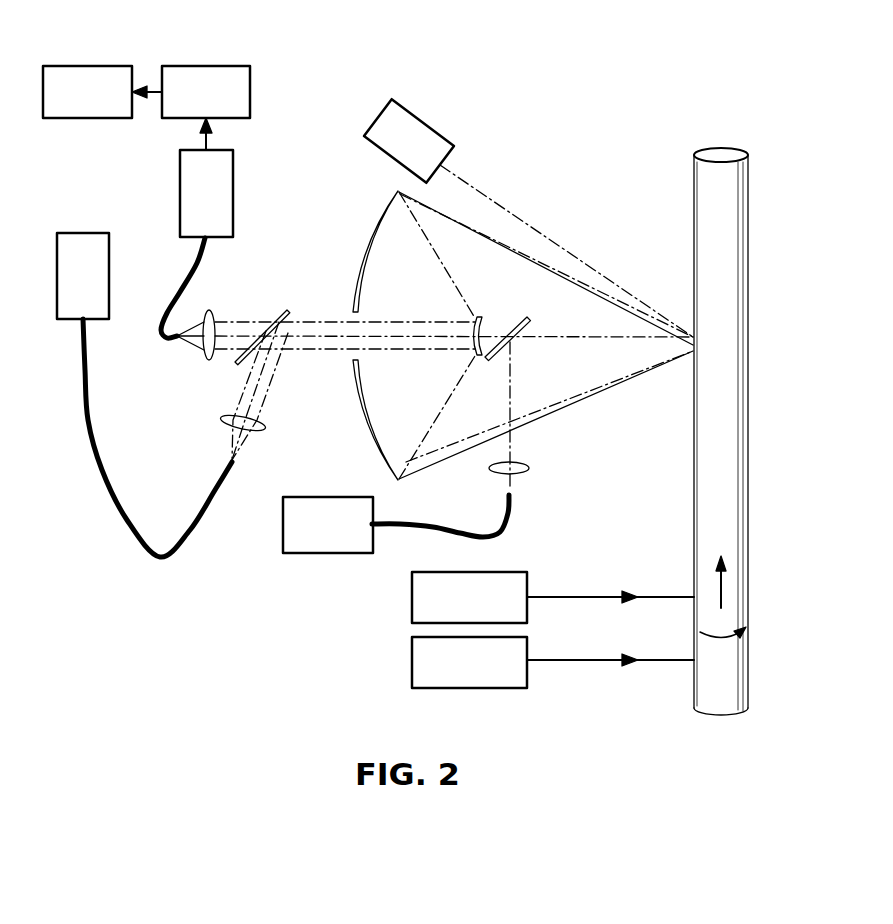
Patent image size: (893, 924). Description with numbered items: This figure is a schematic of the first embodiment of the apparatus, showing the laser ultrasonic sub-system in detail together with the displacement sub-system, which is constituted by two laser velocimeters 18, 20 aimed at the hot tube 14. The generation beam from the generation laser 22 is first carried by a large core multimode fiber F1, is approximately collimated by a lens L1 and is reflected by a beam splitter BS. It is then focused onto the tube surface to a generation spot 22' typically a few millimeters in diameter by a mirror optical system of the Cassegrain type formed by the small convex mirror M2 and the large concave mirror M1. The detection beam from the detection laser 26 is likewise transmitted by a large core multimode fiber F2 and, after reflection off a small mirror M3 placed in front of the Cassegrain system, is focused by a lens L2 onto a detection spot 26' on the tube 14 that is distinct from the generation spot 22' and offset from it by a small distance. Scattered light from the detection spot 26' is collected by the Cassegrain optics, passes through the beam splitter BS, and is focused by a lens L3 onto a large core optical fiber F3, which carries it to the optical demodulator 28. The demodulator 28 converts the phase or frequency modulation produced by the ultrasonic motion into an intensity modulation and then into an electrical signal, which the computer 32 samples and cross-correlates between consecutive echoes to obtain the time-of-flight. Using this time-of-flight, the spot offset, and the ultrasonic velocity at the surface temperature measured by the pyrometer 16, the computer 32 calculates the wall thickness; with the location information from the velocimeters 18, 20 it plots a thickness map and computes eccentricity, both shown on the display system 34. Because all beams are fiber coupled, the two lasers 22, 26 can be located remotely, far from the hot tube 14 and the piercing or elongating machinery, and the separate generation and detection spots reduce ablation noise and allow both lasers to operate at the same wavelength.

The tube 14 is at (742, 172).
The pyrometer 16 is at (405, 112).
The velocimeter 18 is at (412, 597).
The velocimeter 20 is at (412, 660).
The generation laser 22 is at (83, 249).
The generation spot 22' is at (758, 393).
The detection laser 26 is at (321, 550).
The detection spot 26' is at (754, 316).
The optical demodulator 28 is at (234, 170).
The computer 32 is at (186, 66).
The display system 34 is at (66, 66).
The large concave mirror M1 is at (372, 230).
The small convex mirror M2 is at (480, 316).
The small mirror M3 is at (528, 318).
The beam splitter BS is at (287, 310).
The lens L1 is at (262, 424).
The lens L2 is at (530, 466).
The lens L3 is at (207, 360).
The large core multimode fiber F1 is at (85, 395).
The large core multimode fiber F2 is at (509, 522).
The large core optical fiber F3 is at (175, 290).